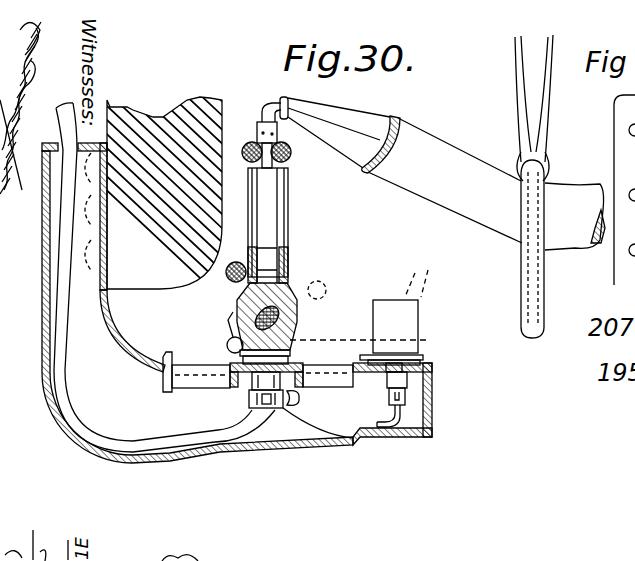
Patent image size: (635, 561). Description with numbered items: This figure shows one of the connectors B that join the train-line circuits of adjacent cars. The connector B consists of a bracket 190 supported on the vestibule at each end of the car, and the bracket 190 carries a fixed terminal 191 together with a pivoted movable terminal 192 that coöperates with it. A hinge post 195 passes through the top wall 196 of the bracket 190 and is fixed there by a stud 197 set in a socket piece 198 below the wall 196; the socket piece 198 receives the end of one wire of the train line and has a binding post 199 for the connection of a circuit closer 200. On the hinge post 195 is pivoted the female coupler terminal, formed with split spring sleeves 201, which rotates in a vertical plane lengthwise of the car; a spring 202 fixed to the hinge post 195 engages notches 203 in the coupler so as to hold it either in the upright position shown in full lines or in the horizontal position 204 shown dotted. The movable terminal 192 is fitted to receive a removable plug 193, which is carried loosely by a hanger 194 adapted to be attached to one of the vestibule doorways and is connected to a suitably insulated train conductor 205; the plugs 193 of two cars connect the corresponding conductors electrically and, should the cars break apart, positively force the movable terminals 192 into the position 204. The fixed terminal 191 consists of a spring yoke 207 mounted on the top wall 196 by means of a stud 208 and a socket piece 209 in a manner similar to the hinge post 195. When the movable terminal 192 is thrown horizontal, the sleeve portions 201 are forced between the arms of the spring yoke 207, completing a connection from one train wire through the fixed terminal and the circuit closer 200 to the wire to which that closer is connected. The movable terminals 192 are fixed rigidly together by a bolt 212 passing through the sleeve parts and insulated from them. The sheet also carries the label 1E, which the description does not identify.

The fixed block / wall section 1E is at (187, 120).
The connector B is at (245, 462).
The bracket 190 is at (634, 447).
The fixed terminal 191 is at (418, 326).
The movable terminal 192 is at (280, 255).
The removable plug 193 is at (281, 226).
The hanger 194 is at (526, 303).
The hinge post 195 is at (293, 330).
The top wall 196 is at (423, 357).
The stud 197 is at (245, 378).
The socket piece 198 is at (290, 410).
The binding post 199 is at (350, 445).
The circuit closer 200 is at (425, 440).
The split spring sleeves 201 is at (250, 225).
The spring 202 is at (240, 345).
The notches 203 is at (234, 318).
The horizontal position 204 is at (428, 273).
The train conductors 205 is at (373, 127).
The spring yoke 207 is at (423, 338).
The stud 208 is at (434, 390).
The socket piece 209 is at (406, 412).
The bolt 212 is at (240, 282).